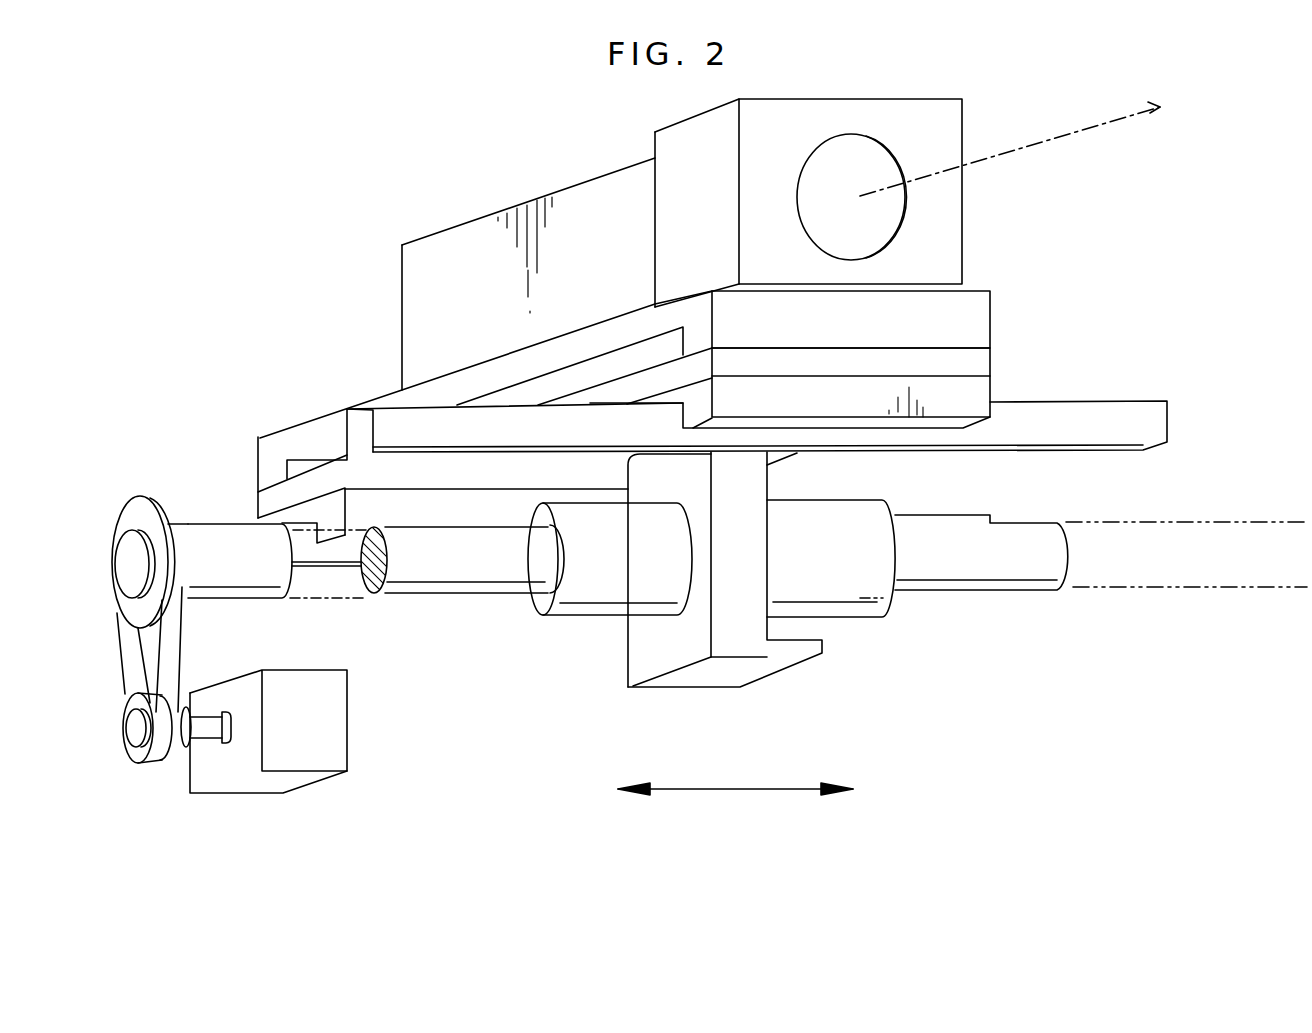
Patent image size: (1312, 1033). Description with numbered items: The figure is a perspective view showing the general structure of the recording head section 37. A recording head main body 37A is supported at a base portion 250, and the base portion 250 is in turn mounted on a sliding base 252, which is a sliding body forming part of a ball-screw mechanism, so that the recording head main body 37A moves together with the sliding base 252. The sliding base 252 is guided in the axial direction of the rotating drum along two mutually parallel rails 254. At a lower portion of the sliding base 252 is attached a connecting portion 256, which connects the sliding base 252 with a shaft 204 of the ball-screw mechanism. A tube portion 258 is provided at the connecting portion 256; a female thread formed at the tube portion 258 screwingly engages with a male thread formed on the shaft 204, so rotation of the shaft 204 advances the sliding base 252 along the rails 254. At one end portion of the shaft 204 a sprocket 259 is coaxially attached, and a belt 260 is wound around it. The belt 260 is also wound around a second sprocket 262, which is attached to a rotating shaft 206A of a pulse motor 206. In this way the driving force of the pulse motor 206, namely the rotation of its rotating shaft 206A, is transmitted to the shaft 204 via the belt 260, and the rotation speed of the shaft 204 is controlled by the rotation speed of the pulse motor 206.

The recording head section 37 is at (275, 245).
The recording head main body 37A is at (957, 120).
The base portion 250 is at (978, 313).
The sliding base 252 is at (980, 393).
The rails 254 is at (1132, 408).
The connecting portion 256 is at (675, 647).
The tube portion 258 is at (593, 595).
The shaft 204 is at (978, 573).
The sprocket 259 is at (135, 512).
The belt 260 is at (162, 597).
The sprocket 262 is at (140, 757).
The pulse motor 206 is at (303, 755).
The rotating shaft 206A is at (210, 740).